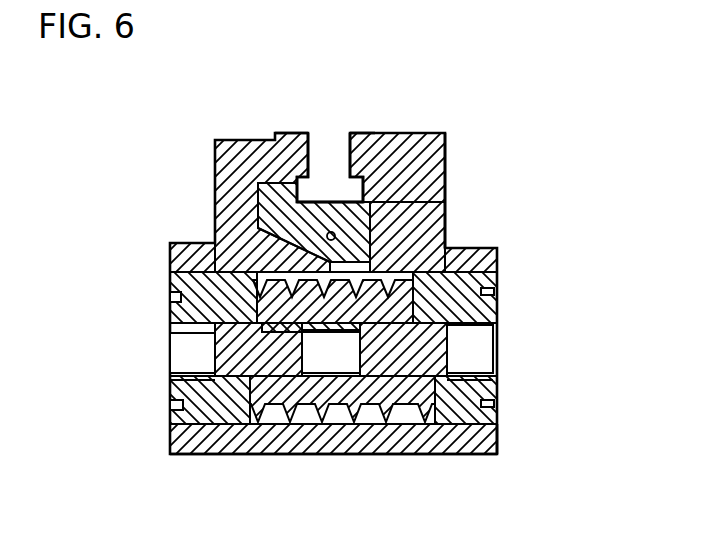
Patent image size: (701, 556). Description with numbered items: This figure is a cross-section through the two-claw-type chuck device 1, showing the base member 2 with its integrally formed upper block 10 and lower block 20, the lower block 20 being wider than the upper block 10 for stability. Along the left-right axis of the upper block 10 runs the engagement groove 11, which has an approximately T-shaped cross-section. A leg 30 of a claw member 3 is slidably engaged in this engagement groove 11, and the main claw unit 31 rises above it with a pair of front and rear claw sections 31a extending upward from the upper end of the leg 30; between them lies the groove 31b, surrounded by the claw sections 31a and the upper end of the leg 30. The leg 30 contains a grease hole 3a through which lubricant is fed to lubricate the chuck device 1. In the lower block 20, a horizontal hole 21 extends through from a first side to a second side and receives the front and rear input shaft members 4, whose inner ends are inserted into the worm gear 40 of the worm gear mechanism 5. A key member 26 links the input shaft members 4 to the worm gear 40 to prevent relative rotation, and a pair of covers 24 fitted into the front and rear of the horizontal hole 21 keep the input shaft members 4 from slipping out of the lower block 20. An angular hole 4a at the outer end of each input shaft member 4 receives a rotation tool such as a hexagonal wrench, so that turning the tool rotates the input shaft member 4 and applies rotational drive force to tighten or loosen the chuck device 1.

The two-claw-type chuck device 1 is at (542, 145).
The base member 2 is at (205, 172).
The claw member 3 is at (367, 128).
The grease hole 3a is at (398, 208).
The input shaft member 4 is at (223, 457).
The angular hole 4a is at (183, 353).
The worm gear mechanism 5 is at (378, 434).
The upper block 10 is at (447, 162).
The engagement groove 11 is at (233, 209).
The lower block 20 is at (500, 444).
The horizontal hole 21 is at (478, 444).
The cover 24 is at (180, 398).
The key member 26 is at (500, 298).
The leg 30 is at (215, 244).
The main claw unit 31 is at (262, 140).
The claw section 31a is at (300, 132).
The groove 31b is at (325, 178).
The worm gear 40 is at (332, 457).